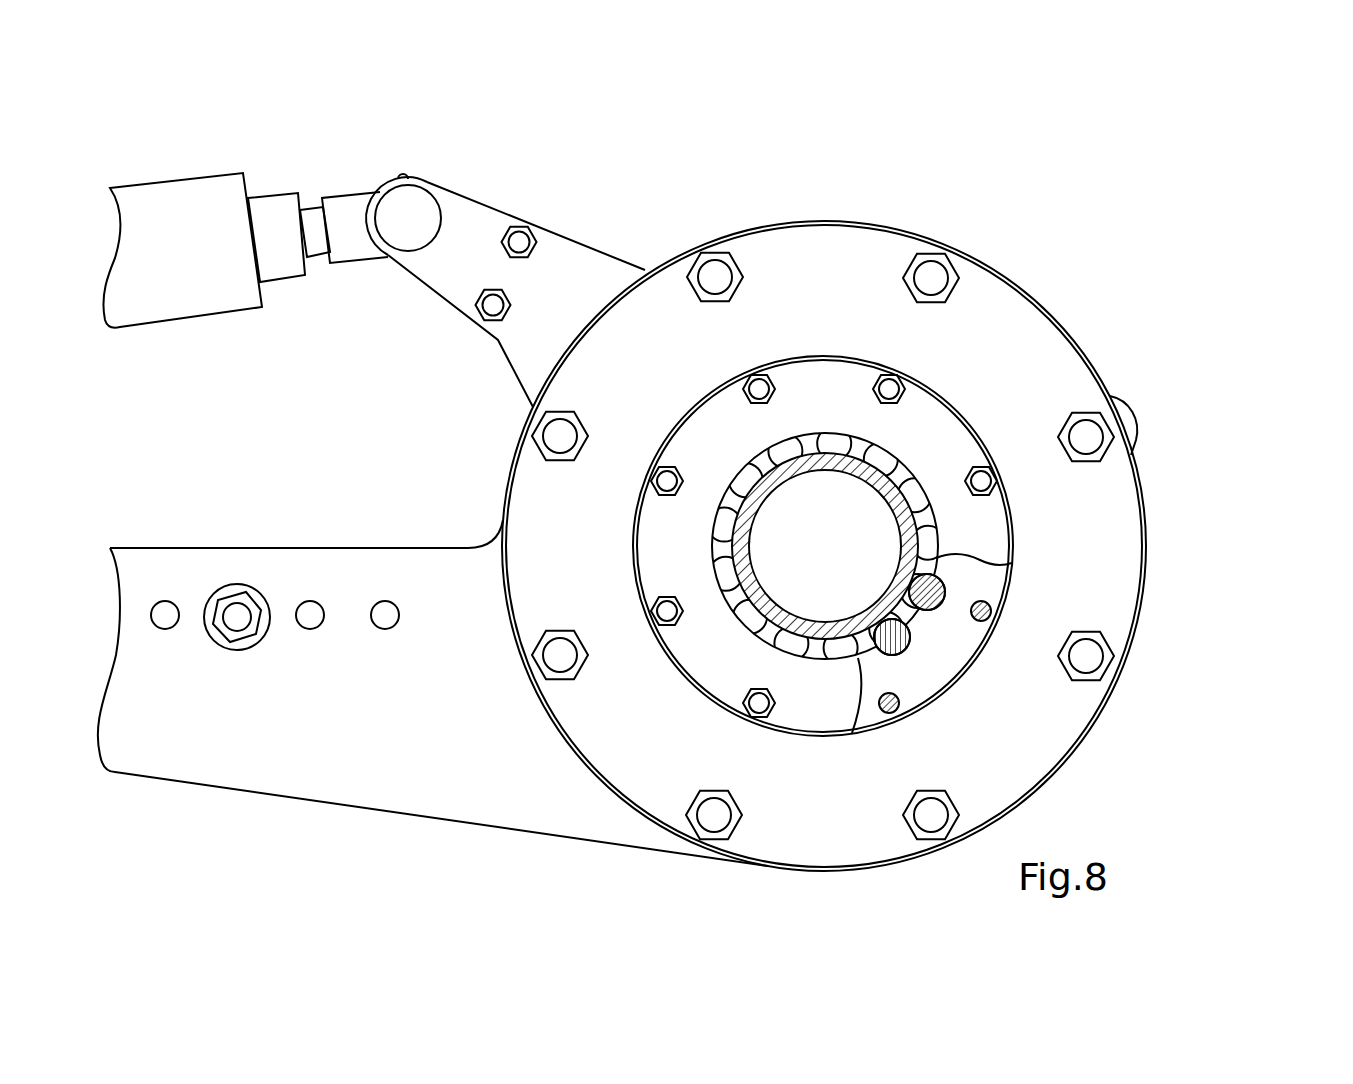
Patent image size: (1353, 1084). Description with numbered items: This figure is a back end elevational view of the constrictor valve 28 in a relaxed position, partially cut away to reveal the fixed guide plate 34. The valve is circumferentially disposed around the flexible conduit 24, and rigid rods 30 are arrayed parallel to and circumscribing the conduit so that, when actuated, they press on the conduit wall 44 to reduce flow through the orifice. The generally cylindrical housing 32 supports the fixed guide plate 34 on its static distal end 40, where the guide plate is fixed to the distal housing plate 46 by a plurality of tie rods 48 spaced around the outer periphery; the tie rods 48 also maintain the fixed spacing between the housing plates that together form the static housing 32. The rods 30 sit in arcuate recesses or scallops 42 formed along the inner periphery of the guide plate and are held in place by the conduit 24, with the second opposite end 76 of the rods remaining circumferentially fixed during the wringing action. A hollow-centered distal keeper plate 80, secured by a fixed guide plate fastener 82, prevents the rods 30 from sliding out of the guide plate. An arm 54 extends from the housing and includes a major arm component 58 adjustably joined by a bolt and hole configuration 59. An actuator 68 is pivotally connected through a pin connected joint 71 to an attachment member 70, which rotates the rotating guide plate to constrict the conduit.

The constrictor valve 28 is at (1252, 192).
The housing 32 is at (1193, 362).
The distal housing plate 46 is at (1022, 773).
The tie rods 48 is at (935, 278).
The distal keeper plate 80 is at (822, 382).
The fixed guide plate fastener 82 is at (982, 474).
The fixed guide plate 34 is at (973, 583).
The second opposite end 76 is at (828, 655).
The conduit wall 44 is at (903, 522).
The flexible conduit 24 is at (762, 487).
The scallops 42 is at (910, 638).
The rigid rods 30 is at (868, 622).
The arm 54 is at (393, 777).
The major arm component 58 is at (162, 738).
The bolt and hole configuration 59 is at (233, 610).
The distal end 40 is at (656, 890).
The actuator 68 is at (184, 208).
The pin connected joint 71 is at (415, 208).
The attachment member 70 is at (580, 258).